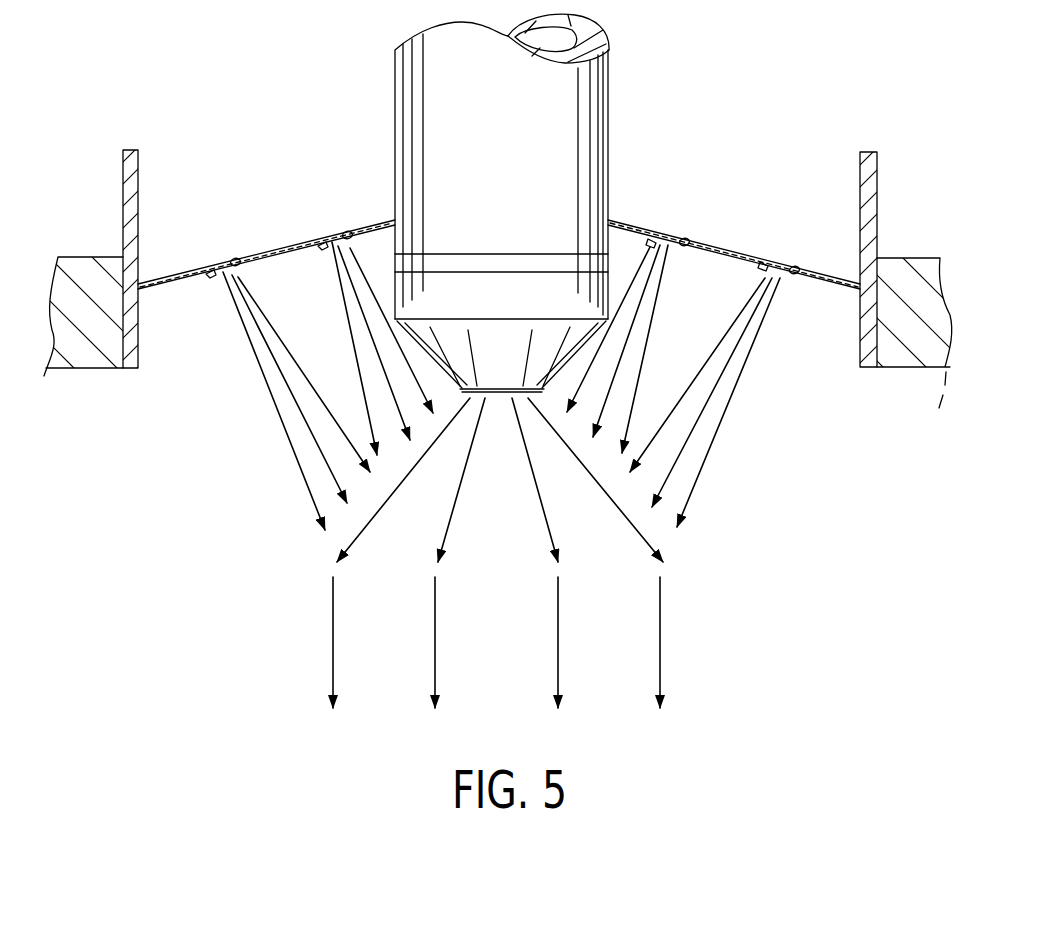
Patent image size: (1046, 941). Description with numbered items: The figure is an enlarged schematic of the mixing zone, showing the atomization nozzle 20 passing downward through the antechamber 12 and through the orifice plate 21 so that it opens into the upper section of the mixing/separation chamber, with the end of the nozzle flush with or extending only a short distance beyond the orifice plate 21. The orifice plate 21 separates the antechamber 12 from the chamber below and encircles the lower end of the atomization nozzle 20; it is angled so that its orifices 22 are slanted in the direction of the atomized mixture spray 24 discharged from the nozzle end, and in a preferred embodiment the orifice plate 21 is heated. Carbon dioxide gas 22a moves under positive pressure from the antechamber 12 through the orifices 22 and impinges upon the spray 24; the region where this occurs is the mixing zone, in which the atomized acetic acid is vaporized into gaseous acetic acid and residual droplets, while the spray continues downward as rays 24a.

The antechamber 12 is at (877, 210).
The atomization nozzle 20 is at (608, 180).
The orifice plate 21 is at (280, 250).
The orifices 22 is at (333, 243).
The carbon dioxide gas 22a is at (372, 338).
The atomized mixture spray 24 is at (532, 477).
The parallel light rays 24a is at (662, 633).